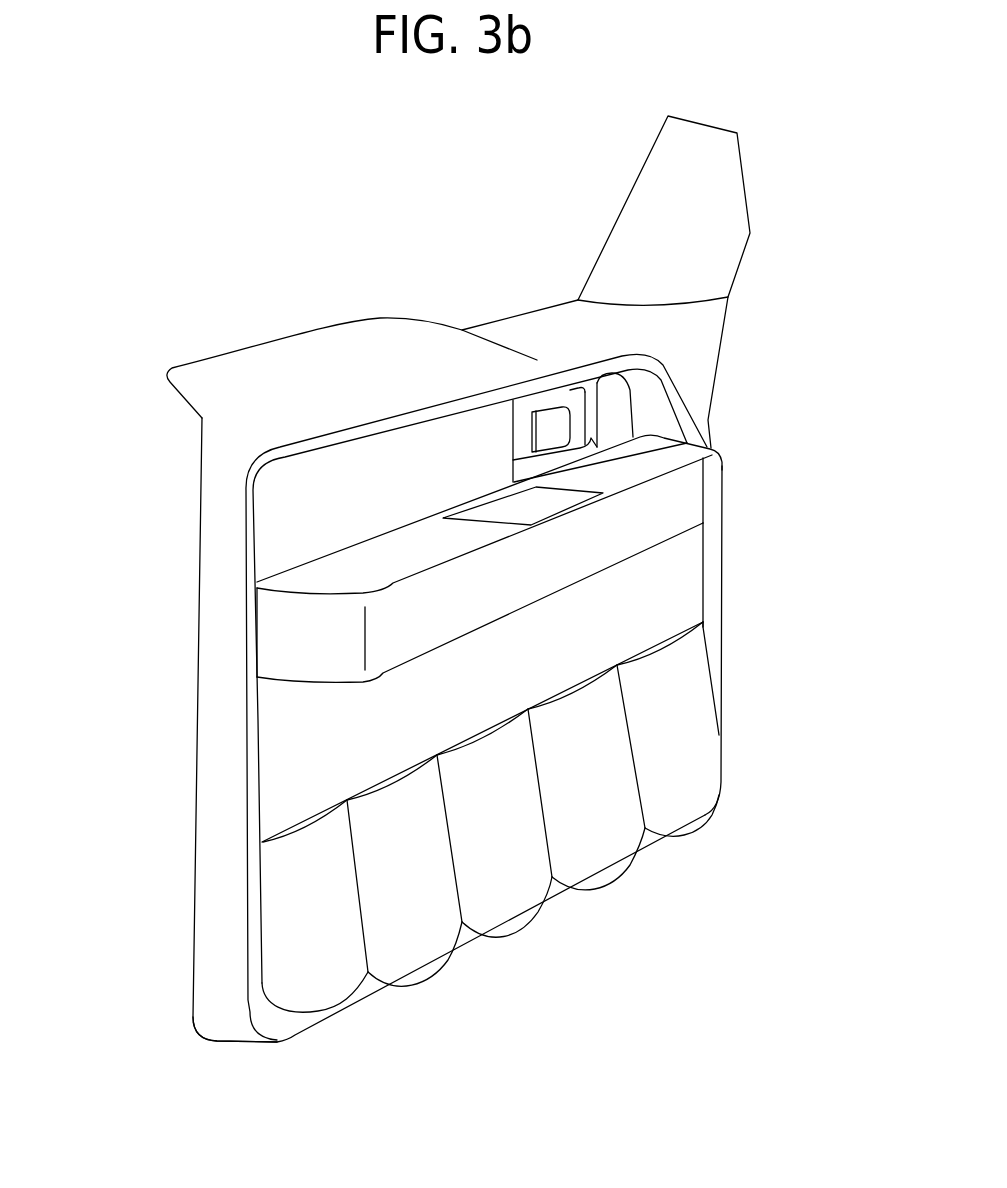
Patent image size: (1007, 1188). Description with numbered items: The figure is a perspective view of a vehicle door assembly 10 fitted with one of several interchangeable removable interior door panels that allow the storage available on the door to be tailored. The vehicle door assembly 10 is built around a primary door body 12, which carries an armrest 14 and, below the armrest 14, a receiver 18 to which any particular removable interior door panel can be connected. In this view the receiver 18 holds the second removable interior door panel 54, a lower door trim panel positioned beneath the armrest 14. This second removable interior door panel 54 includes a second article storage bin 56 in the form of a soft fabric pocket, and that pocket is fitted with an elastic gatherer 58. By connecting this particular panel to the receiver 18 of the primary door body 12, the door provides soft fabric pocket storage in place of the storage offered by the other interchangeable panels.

The vehicle door assembly 10 is at (172, 288).
The primary door body 12 is at (215, 552).
The armrest 14 is at (355, 572).
The receiver 18 is at (298, 812).
The second removable interior door panel 54 is at (262, 980).
The second article storage bin 56 is at (603, 828).
The elastic gatherer 58 is at (597, 673).